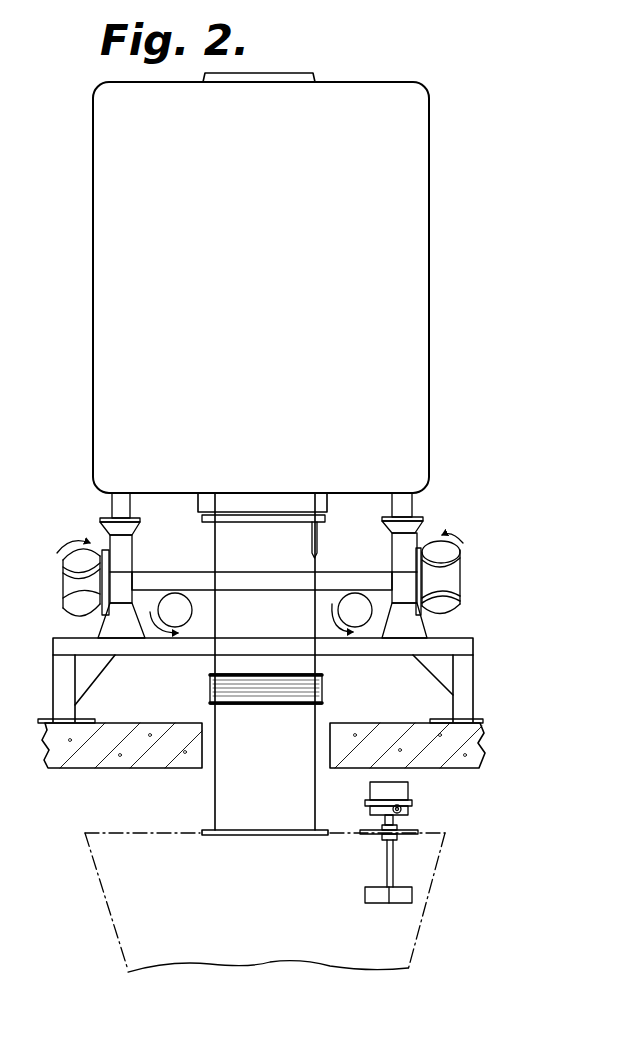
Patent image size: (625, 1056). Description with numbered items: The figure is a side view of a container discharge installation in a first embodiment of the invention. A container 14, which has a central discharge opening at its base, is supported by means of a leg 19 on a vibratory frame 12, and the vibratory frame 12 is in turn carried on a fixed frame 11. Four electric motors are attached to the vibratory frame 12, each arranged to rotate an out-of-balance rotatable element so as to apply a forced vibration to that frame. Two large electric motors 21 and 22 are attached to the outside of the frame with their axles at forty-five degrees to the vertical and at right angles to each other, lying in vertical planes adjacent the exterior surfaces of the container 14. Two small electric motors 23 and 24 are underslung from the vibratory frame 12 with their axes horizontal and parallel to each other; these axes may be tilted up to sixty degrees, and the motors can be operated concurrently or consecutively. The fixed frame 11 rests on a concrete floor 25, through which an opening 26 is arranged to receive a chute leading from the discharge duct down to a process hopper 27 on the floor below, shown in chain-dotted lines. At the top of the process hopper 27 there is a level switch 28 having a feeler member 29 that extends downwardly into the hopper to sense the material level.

The fixed frame 11 is at (65, 702).
The vibratory frame 12 is at (160, 578).
The container 14 is at (418, 368).
The leg 19 is at (118, 505).
The large electric motor 21 is at (72, 582).
The large electric motor 22 is at (445, 585).
The small electric motor 23 is at (183, 613).
The small electric motor 24 is at (332, 609).
The concrete floor 25 is at (447, 758).
The opening 26 is at (203, 745).
The process hopper 27 is at (107, 897).
The level switch 28 is at (405, 810).
The feeler member 29 is at (377, 900).